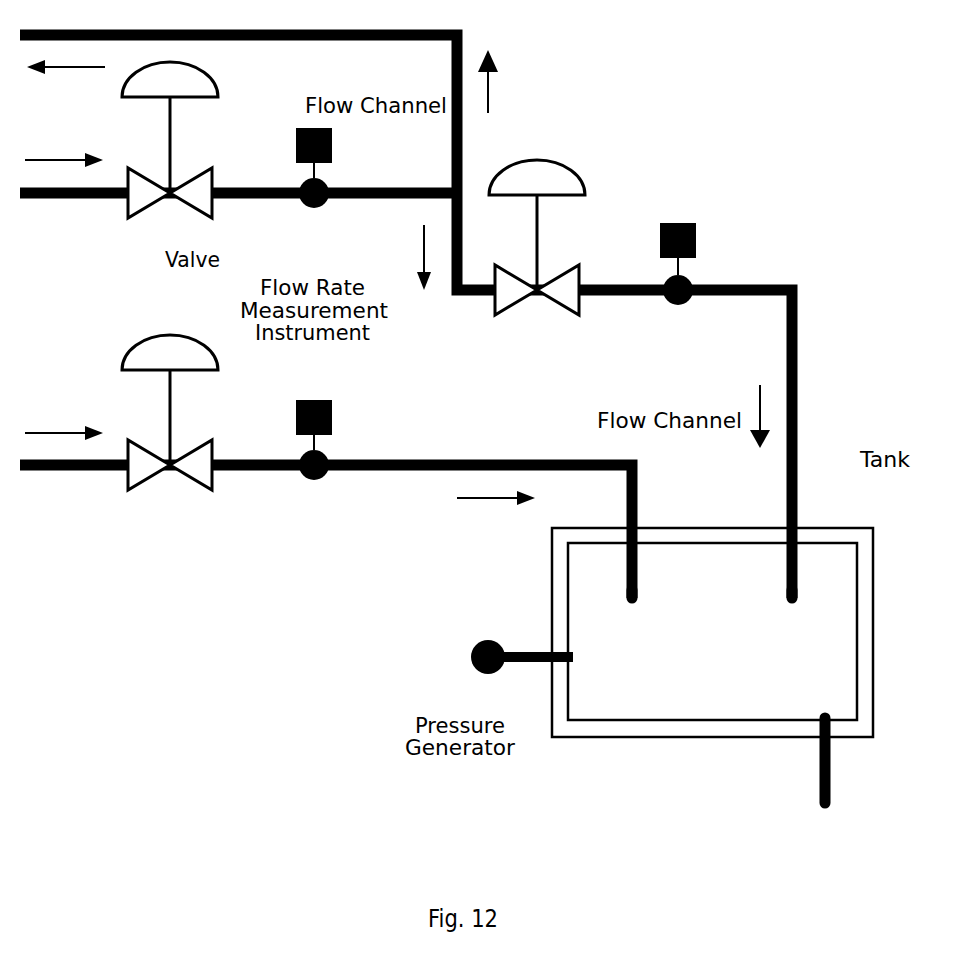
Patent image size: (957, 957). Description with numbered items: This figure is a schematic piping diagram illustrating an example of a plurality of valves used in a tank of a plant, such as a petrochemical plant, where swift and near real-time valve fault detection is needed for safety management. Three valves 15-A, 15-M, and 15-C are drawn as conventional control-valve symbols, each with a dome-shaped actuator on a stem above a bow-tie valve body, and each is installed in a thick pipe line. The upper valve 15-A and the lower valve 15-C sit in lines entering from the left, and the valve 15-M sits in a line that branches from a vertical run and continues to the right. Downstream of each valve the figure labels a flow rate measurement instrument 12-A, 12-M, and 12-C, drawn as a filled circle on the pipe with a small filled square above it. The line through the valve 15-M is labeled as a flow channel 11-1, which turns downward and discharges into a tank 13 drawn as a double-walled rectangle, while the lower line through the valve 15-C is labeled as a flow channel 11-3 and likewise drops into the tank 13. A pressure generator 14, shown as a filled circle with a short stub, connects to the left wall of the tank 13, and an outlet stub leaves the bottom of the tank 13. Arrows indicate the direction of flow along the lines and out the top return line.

The flow channel 11-1 is at (375, 186).
The flow channel 11-3 is at (522, 457).
The flow rate measurement instrument 12-A is at (308, 213).
The flow rate measurement instrument 12-M is at (680, 306).
The flow rate measurement instrument 12-C is at (308, 487).
The tank 13 is at (823, 525).
The pressure generator 14 is at (483, 677).
The valve 15-A is at (128, 217).
The valve 15-M is at (507, 312).
The valve 15-C is at (128, 492).